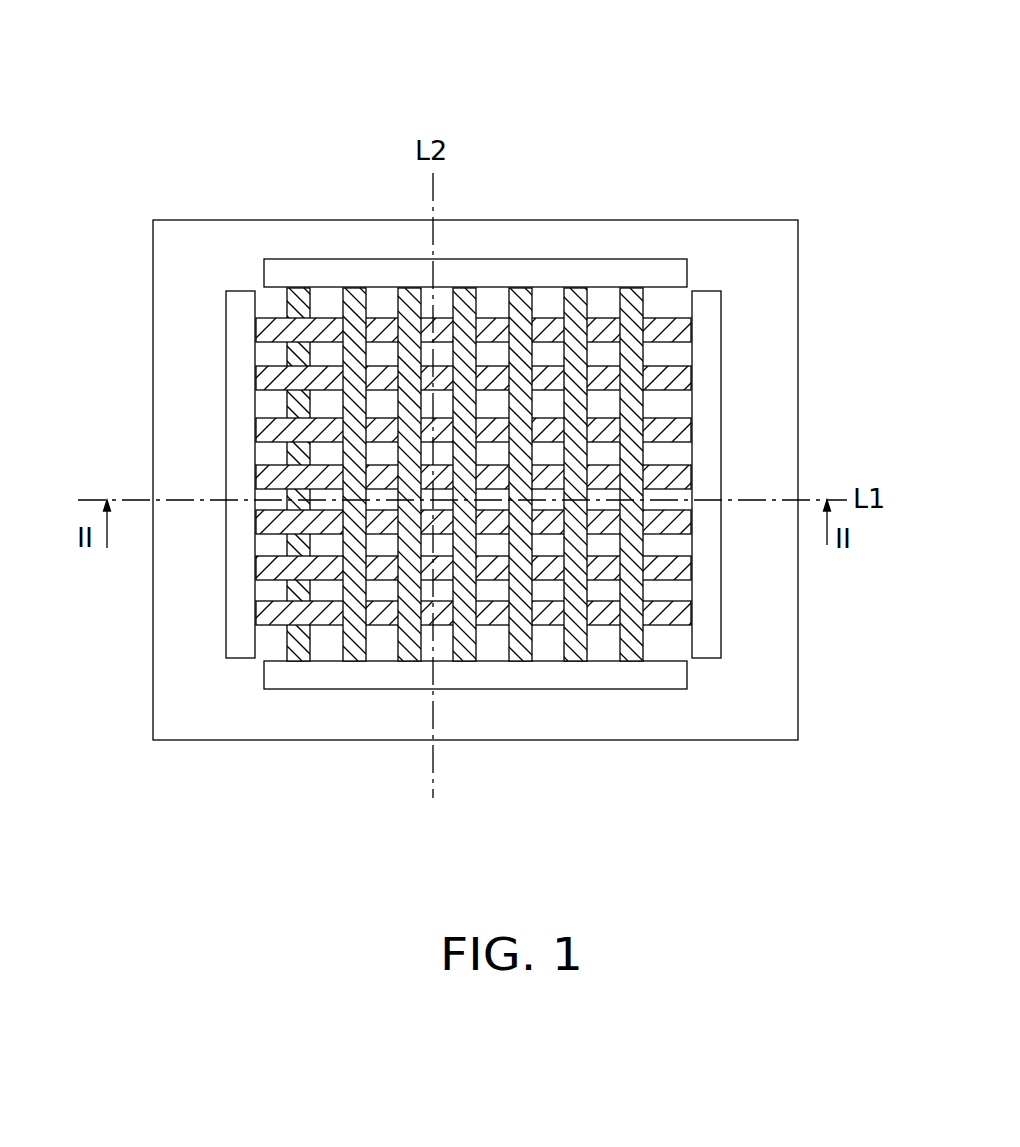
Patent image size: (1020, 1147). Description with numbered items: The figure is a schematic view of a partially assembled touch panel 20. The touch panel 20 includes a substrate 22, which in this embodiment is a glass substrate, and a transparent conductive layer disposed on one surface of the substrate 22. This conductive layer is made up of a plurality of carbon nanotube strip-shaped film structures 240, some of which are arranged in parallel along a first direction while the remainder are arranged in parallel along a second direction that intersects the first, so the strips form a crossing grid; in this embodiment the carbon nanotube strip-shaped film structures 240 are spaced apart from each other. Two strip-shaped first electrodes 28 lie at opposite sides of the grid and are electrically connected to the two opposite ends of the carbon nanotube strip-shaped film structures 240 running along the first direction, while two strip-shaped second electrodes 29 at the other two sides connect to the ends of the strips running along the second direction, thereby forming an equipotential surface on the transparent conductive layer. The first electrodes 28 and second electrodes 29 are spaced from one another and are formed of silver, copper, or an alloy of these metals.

The touch panel 20 is at (478, 36).
The substrate 22 is at (217, 239).
The first electrodes 28 is at (235, 555).
The second electrodes 29 is at (572, 272).
The carbon nanotube strip-shaped film structures 240 is at (682, 610).